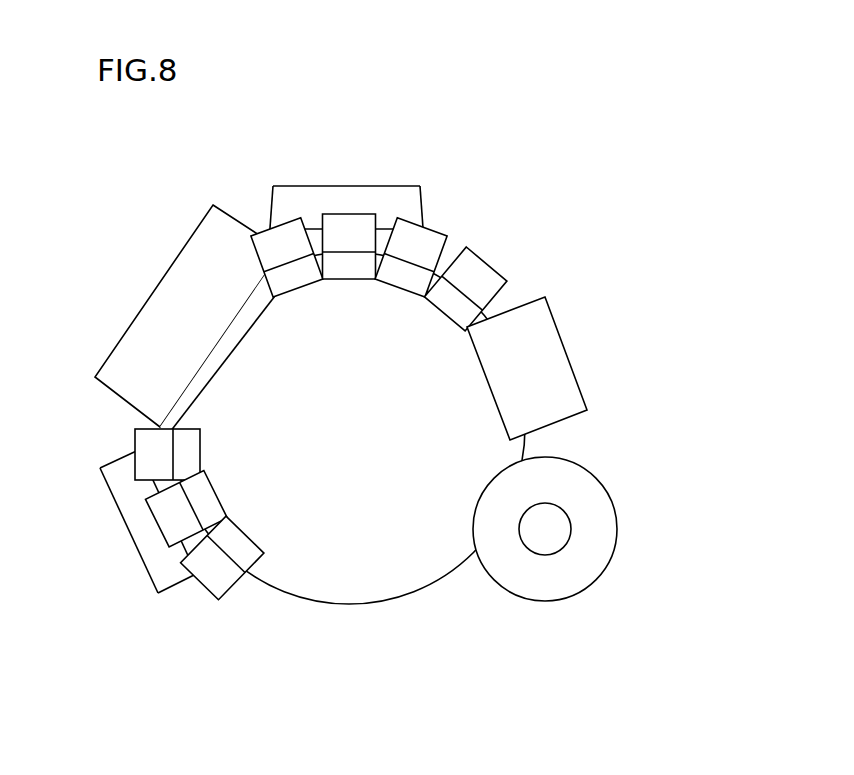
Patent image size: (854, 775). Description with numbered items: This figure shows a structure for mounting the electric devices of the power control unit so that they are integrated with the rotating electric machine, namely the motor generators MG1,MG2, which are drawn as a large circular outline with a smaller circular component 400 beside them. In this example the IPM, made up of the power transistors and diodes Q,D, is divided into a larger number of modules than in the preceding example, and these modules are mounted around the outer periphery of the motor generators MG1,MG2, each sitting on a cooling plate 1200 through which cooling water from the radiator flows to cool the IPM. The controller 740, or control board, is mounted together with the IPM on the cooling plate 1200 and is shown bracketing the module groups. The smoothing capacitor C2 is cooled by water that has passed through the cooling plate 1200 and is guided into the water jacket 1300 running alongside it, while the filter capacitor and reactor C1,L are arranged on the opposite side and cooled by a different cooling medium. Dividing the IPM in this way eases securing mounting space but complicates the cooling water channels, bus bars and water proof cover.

The cooling plate 1200 is at (340, 263).
The controller 740 is at (372, 198).
The water jacket 1300 is at (212, 353).
The pump / motor 400 is at (605, 476).
The power transistors and diodes Q,D is at (267, 242).
The smoothing capacitor C2 is at (167, 297).
The filter capacitor and reactor C1,L is at (552, 357).
The motor generators MG1,MG2 is at (386, 606).